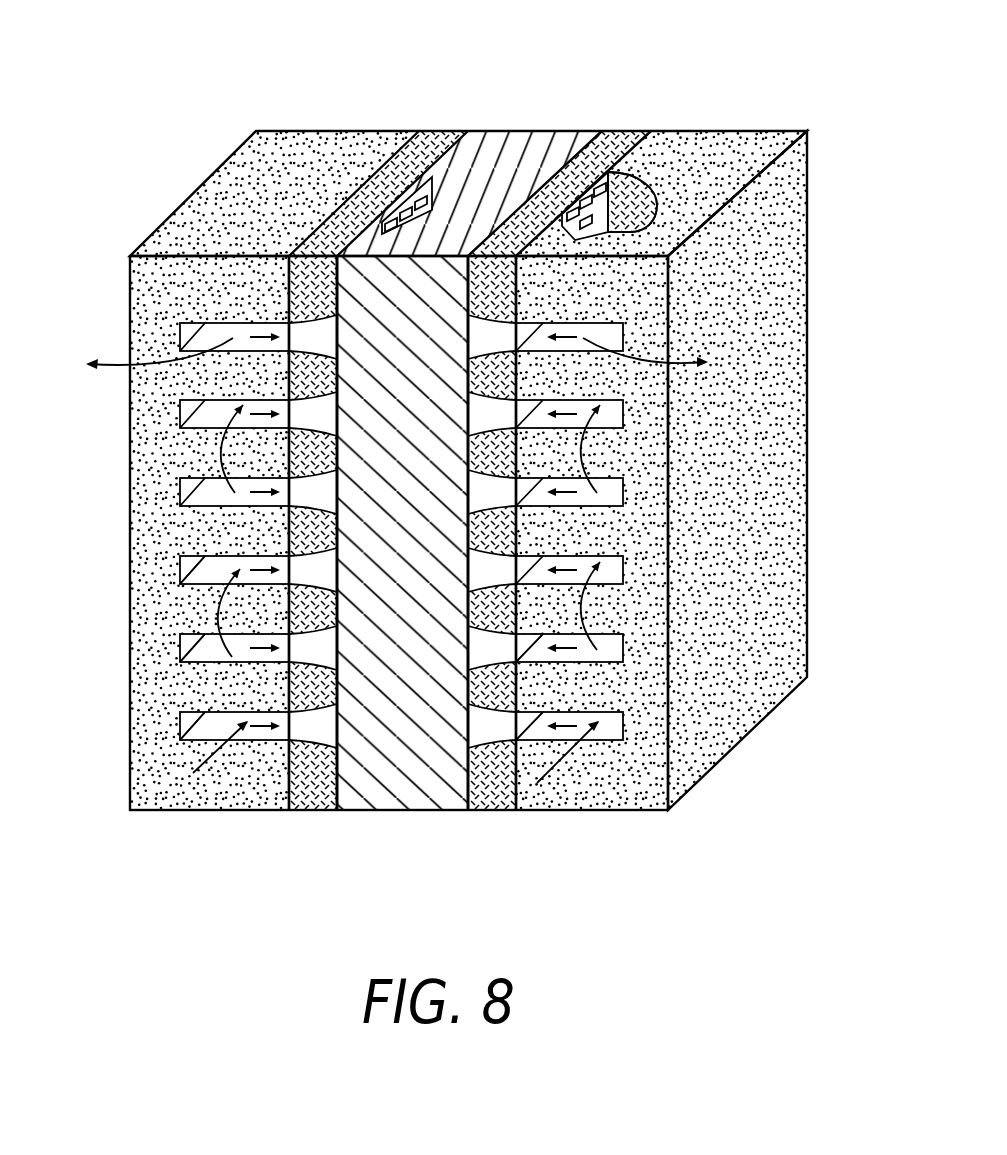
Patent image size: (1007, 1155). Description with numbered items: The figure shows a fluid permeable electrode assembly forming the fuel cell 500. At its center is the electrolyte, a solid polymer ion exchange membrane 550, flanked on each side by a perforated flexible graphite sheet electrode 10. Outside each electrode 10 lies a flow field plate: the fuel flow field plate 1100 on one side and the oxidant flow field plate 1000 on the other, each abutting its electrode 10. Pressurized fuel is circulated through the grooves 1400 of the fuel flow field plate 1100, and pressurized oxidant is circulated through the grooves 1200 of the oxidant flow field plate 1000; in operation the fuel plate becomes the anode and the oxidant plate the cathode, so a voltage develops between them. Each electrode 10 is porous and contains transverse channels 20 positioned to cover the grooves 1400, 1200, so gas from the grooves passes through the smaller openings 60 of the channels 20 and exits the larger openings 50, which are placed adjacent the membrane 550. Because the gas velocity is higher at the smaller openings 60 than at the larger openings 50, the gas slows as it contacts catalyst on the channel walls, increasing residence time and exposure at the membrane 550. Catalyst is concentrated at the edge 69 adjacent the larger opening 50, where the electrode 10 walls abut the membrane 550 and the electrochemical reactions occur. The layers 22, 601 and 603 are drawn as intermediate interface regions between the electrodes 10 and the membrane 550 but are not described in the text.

The fuel cell 500 is at (622, 112).
The oxidant flow field plate 1000 is at (797, 197).
The fuel flow field plate 1100 is at (210, 177).
The porous distribution layer 22 is at (388, 168).
The edge 69 is at (458, 320).
The ion exchange membrane 550 is at (470, 242).
The smaller opening 60 is at (578, 232).
The channel 20 is at (433, 188).
The larger opening 50 is at (378, 186).
The grooves of fuel flow field plate 1400 is at (203, 737).
The grooves of oxidant flow field plate 1200 is at (613, 652).
The electrode 10 is at (297, 813).
The first interface layer 601 is at (333, 813).
The second interface layer 603 is at (468, 795).